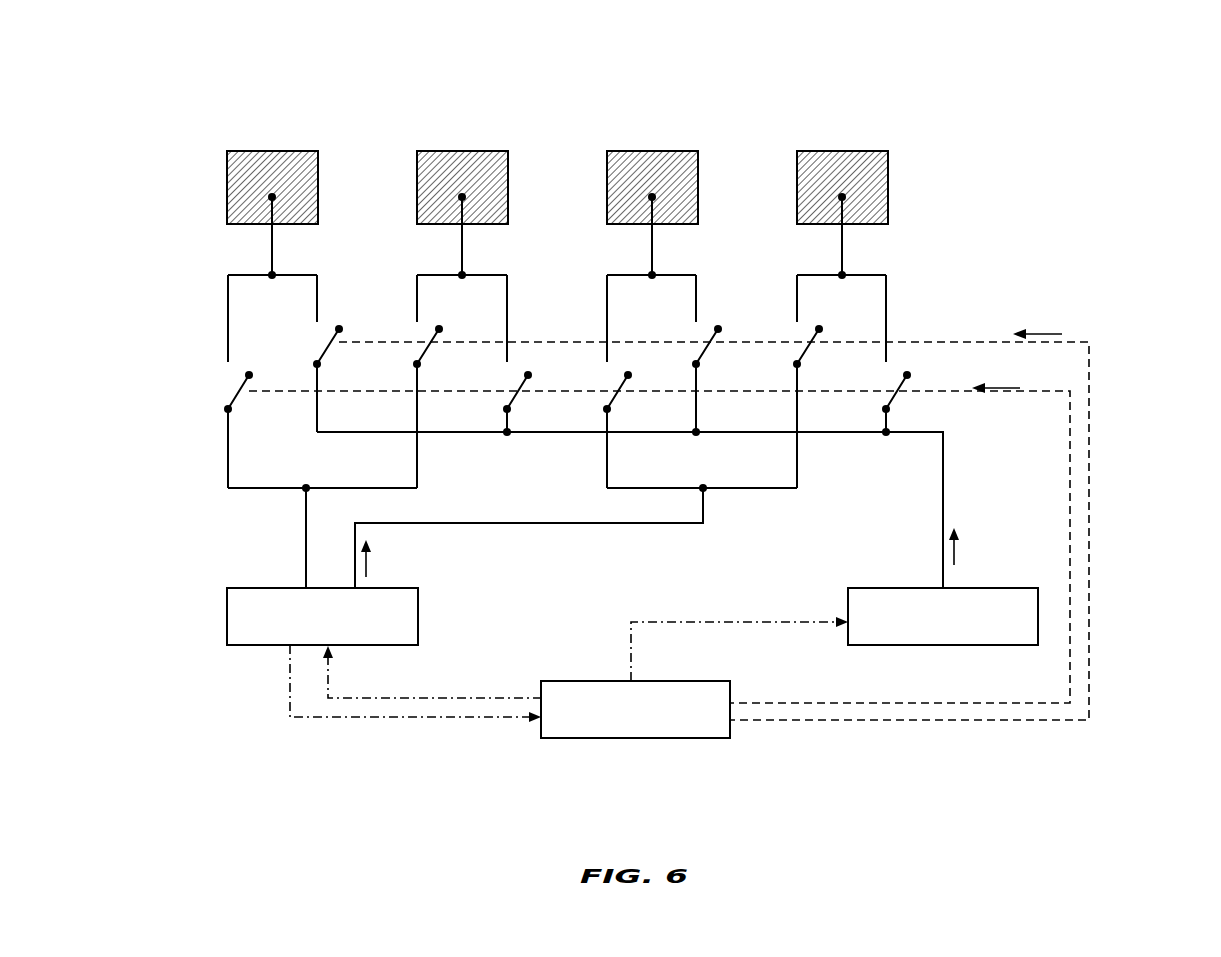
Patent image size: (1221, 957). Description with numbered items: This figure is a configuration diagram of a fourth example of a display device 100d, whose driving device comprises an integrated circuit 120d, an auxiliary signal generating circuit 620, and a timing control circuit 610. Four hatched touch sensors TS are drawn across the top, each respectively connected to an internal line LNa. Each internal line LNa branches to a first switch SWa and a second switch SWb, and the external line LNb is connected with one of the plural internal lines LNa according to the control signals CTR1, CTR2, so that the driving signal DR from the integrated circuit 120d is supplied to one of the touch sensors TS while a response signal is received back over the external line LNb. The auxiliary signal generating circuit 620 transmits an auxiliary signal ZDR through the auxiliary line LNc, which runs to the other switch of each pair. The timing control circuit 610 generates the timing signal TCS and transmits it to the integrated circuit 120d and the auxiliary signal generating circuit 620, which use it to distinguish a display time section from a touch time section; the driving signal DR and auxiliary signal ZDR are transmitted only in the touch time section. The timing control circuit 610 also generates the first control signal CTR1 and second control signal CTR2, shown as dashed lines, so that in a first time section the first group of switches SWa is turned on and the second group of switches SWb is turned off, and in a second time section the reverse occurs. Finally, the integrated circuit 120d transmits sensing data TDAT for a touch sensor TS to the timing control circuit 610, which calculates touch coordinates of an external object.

The touch sensing device 100d is at (132, 64).
The integrated circuit 120d is at (227, 612).
The timing control circuit 610 is at (730, 732).
The auxiliary signal generating circuit 620 is at (1038, 612).
The touch sensor TS is at (273, 150).
The first group of switches SWa is at (542, 381).
The second group of switches SWb is at (540, 381).
The internal line LNa is at (842, 246).
The external line LNb is at (703, 512).
The auxiliary line LNc is at (943, 492).
The first control signal CTR1 is at (659, 529).
The second control signal CTR2 is at (714, 511).
The driving signal DR is at (389, 558).
The auxiliary signal ZDR is at (984, 546).
The timing signal TCS is at (585, 641).
The sensing data TDAT is at (415, 699).